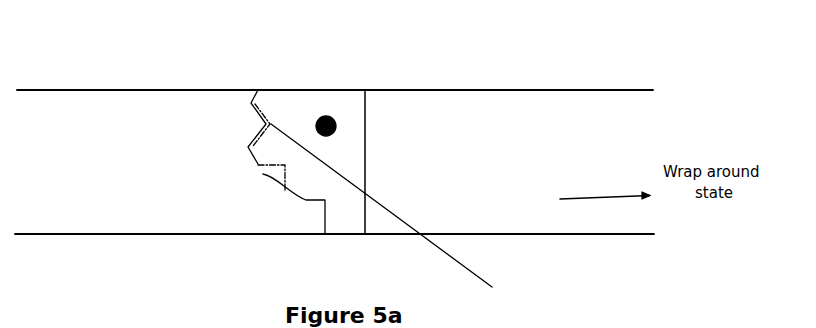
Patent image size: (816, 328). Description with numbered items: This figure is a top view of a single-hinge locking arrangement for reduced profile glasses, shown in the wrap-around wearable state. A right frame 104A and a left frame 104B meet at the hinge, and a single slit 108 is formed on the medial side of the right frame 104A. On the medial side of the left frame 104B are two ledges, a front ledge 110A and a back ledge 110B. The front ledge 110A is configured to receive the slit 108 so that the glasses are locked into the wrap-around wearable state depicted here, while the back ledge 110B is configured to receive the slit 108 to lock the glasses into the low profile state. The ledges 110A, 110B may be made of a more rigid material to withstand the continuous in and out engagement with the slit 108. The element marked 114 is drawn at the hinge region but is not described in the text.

The right frame 104A is at (538, 118).
The left frame 104B is at (150, 173).
The slit 108 is at (394, 209).
The front ledge 110A is at (252, 125).
The back ledge 110B is at (270, 172).
The pivot point 114 is at (332, 117).